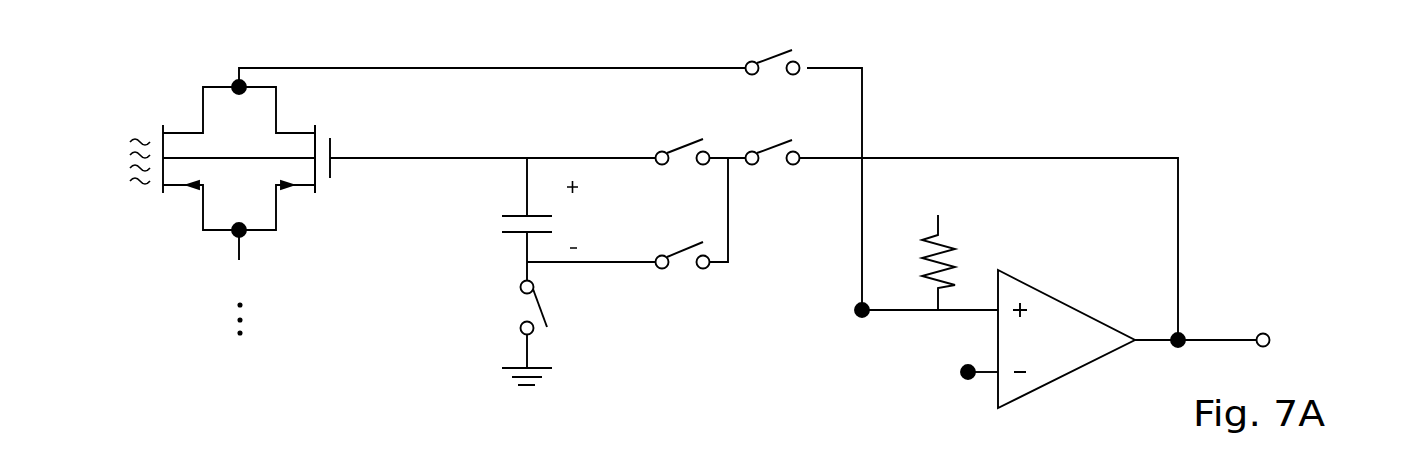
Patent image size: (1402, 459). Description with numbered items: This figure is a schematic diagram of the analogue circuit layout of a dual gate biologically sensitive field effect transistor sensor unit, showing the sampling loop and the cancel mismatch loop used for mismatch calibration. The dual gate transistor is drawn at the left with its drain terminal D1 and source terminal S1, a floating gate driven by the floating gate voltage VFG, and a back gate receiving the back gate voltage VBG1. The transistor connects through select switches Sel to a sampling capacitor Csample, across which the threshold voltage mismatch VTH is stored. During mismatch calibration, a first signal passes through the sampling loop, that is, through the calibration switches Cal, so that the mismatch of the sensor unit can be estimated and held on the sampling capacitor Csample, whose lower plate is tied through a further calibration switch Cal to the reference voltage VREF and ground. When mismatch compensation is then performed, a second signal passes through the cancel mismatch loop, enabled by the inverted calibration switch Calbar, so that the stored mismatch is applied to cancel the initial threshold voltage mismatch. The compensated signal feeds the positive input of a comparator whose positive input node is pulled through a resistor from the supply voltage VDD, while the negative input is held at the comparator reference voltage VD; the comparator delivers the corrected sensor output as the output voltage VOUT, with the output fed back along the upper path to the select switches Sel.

The drain terminal D 1 D1 is at (451, 68).
The back gate voltage VBG 1 VBG1 is at (352, 136).
The floating gate voltage VFG is at (112, 156).
The source terminal S 1 S1 is at (247, 279).
The sampling capacitor Csample n Csample is at (515, 219).
The threshold voltage mismatch VTH is at (605, 214).
The Cal path Cal is at (615, 220).
The inverted calibration switch Cal-bar Calbar is at (705, 208).
The select switches Sel n Sel is at (782, 91).
The reference voltage VREF is at (495, 363).
The supply voltage VDD with resistor VDD is at (944, 243).
The comparator reference voltage VD is at (957, 368).
The output voltage VOUT is at (1260, 345).